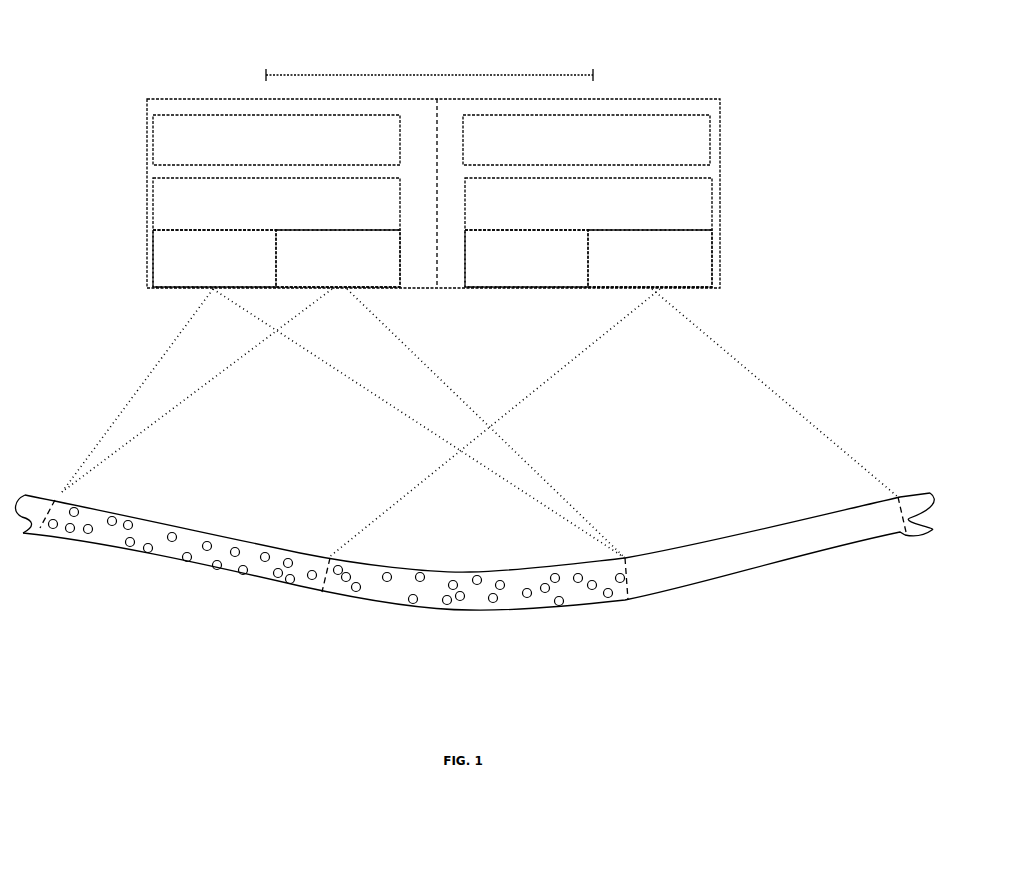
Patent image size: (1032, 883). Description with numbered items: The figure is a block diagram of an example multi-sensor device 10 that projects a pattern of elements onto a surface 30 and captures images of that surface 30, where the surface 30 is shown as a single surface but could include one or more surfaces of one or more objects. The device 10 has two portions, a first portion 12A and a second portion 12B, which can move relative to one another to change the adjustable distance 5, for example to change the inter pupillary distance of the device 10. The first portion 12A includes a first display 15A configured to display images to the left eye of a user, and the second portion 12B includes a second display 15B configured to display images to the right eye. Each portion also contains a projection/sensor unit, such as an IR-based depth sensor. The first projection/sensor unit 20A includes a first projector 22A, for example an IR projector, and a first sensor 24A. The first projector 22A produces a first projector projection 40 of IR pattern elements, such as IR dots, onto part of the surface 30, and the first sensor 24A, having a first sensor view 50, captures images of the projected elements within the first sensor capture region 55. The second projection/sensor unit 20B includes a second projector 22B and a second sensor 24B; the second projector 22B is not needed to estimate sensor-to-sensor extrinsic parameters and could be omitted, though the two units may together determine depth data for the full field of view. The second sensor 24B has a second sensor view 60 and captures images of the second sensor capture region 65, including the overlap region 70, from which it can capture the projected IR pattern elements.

The multi-sensor device 10 is at (212, 99).
The adjustable distance 5 is at (425, 75).
The first portion 12A is at (147, 180).
The second portion 12B is at (720, 178).
The first display 15A is at (276, 140).
The second display 15B is at (586, 140).
The first projection/sensor unit 20A is at (276, 232).
The second projection/sensor unit 20B is at (588, 232).
The first projector 22A is at (214, 258).
The first sensor 24A is at (338, 258).
The second projector 22B is at (526, 258).
The second sensor 24B is at (650, 258).
The surface 30 is at (55, 493).
The first projector projection 40 is at (142, 385).
The first sensor view 50 is at (463, 405).
The second sensor view 60 is at (778, 392).
The first sensor capture region 55 is at (338, 598).
The second sensor capture region 65 is at (595, 605).
The overlap region 70 is at (485, 612).